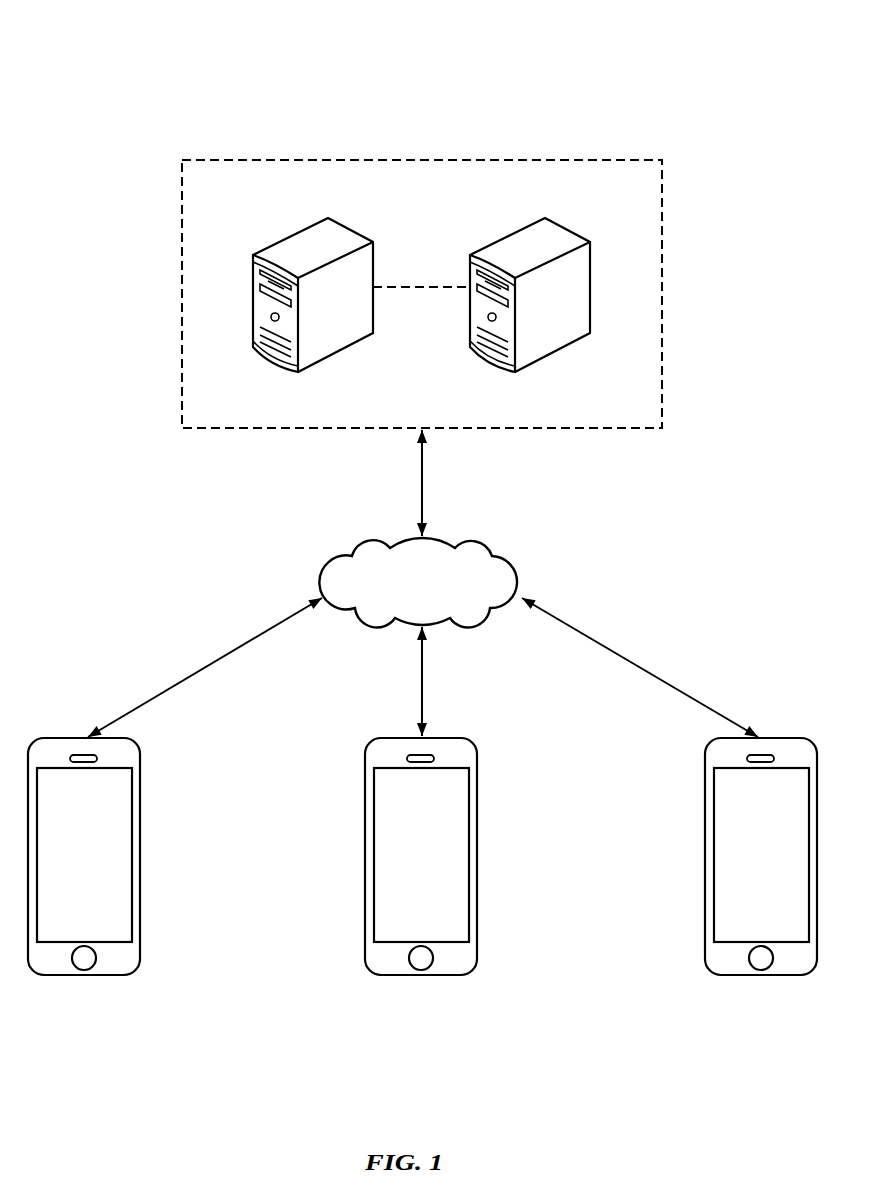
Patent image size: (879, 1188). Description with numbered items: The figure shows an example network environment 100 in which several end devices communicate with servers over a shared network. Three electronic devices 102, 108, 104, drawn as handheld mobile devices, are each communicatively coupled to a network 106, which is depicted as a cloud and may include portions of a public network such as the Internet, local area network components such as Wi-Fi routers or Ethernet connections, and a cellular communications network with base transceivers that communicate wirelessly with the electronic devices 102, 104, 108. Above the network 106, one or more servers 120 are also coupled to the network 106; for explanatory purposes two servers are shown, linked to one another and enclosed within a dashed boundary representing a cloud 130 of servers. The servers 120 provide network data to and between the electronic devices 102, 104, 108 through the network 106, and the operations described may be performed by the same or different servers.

The network environment 100 is at (38, 88).
The cloud of servers 130 is at (182, 220).
The server 120 is at (279, 241).
The network 106 is at (378, 542).
The electronic device 102 is at (84, 976).
The electronic device 108 is at (421, 976).
The electronic device 104 is at (761, 976).